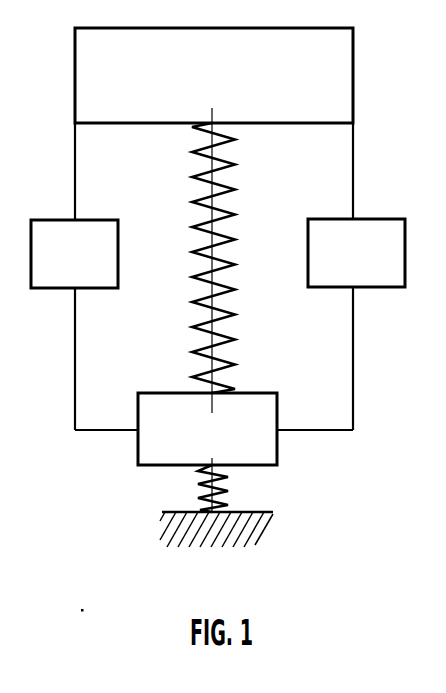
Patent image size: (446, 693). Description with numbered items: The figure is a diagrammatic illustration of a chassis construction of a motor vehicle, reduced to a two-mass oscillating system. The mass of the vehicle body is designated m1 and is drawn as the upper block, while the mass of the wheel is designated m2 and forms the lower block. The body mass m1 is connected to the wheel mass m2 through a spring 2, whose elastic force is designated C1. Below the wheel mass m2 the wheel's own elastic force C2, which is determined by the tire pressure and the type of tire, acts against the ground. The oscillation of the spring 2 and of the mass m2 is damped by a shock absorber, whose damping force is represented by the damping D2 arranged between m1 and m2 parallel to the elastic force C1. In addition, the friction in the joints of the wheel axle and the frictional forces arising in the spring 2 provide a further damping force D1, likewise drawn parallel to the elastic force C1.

The spring 2 is at (222, 317).
The mass of the body m1 is at (214, 75).
The mass of the wheel m2 is at (207, 429).
The elastic force of the spring C1 is at (228, 258).
The elastic force of the wheel C2 is at (228, 490).
The damping force of friction D1 is at (74, 254).
The damping of the shock absorber D2 is at (356, 253).